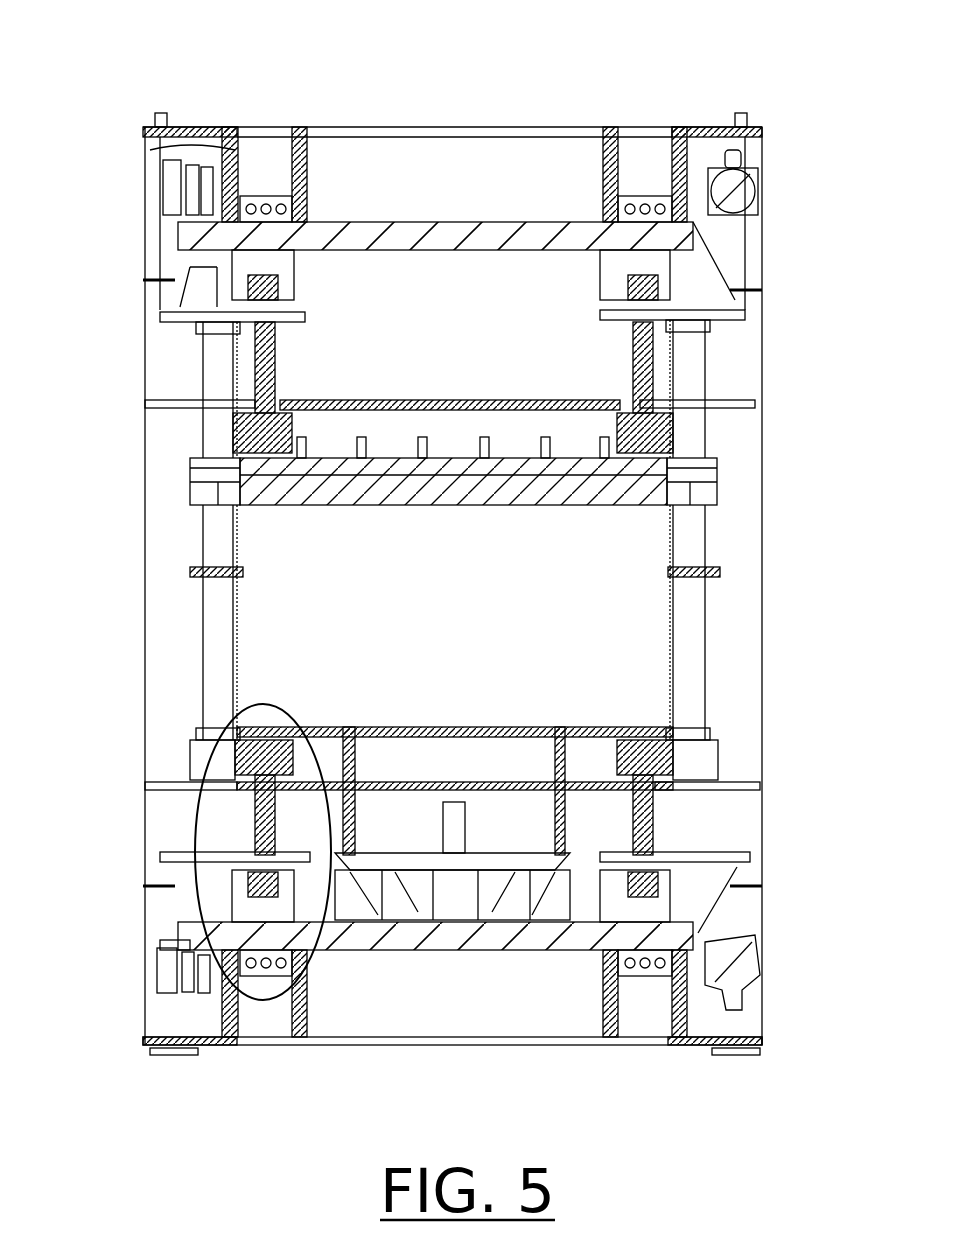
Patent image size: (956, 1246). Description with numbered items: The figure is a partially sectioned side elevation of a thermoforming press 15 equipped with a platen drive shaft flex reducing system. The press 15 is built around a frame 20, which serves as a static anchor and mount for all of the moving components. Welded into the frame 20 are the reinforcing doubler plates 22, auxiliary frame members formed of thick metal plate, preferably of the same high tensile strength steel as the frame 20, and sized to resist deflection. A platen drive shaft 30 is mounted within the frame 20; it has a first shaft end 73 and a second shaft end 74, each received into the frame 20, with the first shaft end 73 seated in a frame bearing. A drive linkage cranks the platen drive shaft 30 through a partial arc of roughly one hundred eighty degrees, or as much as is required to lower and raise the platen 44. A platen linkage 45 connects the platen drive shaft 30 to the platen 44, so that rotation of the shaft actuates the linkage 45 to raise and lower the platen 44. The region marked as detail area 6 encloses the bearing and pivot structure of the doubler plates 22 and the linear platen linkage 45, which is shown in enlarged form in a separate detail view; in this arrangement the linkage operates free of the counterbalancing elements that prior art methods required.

The thermoforming press 15 is at (315, 95).
The frame 20 is at (222, 147).
The doubler plates 22 is at (306, 168).
The platen drive shaft 30 is at (385, 237).
The platen 44 is at (472, 497).
The platen linkage 45 is at (312, 360).
The detail area 6 is at (180, 822).
The first shaft end 73 is at (692, 937).
The second shaft end 74 is at (182, 927).